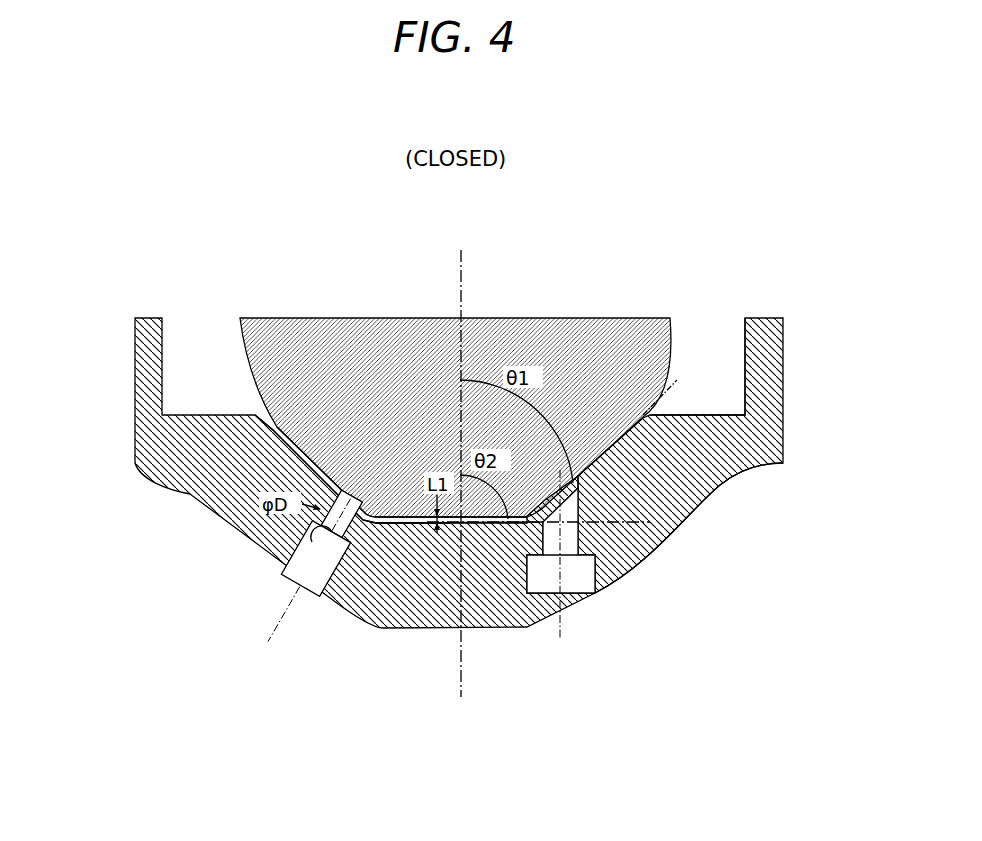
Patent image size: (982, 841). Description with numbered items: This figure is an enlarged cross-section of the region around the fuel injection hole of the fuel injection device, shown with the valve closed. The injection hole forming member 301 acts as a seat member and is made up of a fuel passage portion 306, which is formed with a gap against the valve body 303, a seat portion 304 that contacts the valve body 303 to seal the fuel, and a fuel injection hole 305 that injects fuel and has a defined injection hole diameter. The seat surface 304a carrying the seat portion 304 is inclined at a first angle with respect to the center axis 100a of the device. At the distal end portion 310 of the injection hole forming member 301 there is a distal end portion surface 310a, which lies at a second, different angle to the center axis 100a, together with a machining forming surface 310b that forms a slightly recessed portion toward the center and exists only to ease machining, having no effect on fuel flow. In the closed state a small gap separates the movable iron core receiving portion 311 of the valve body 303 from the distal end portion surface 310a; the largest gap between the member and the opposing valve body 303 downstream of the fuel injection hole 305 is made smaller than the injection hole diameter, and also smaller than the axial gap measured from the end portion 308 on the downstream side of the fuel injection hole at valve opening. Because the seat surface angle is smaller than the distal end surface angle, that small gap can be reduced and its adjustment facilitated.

The center axis 100a is at (463, 250).
The injection hole forming member 301 is at (767, 353).
The valve body 303 is at (500, 335).
The seat portion 304 is at (350, 492).
The seat surface 304a is at (665, 538).
The fuel injection hole 305 is at (310, 567).
The fuel passage portion 306 is at (703, 340).
The end portion on the downstream side of the fuel injection hole 308 is at (355, 530).
The distal end portion 310 is at (465, 540).
The distal end portion surface 310a is at (480, 540).
The machining forming surface 310b is at (440, 535).
The movable iron core receiving portion 311 is at (400, 513).